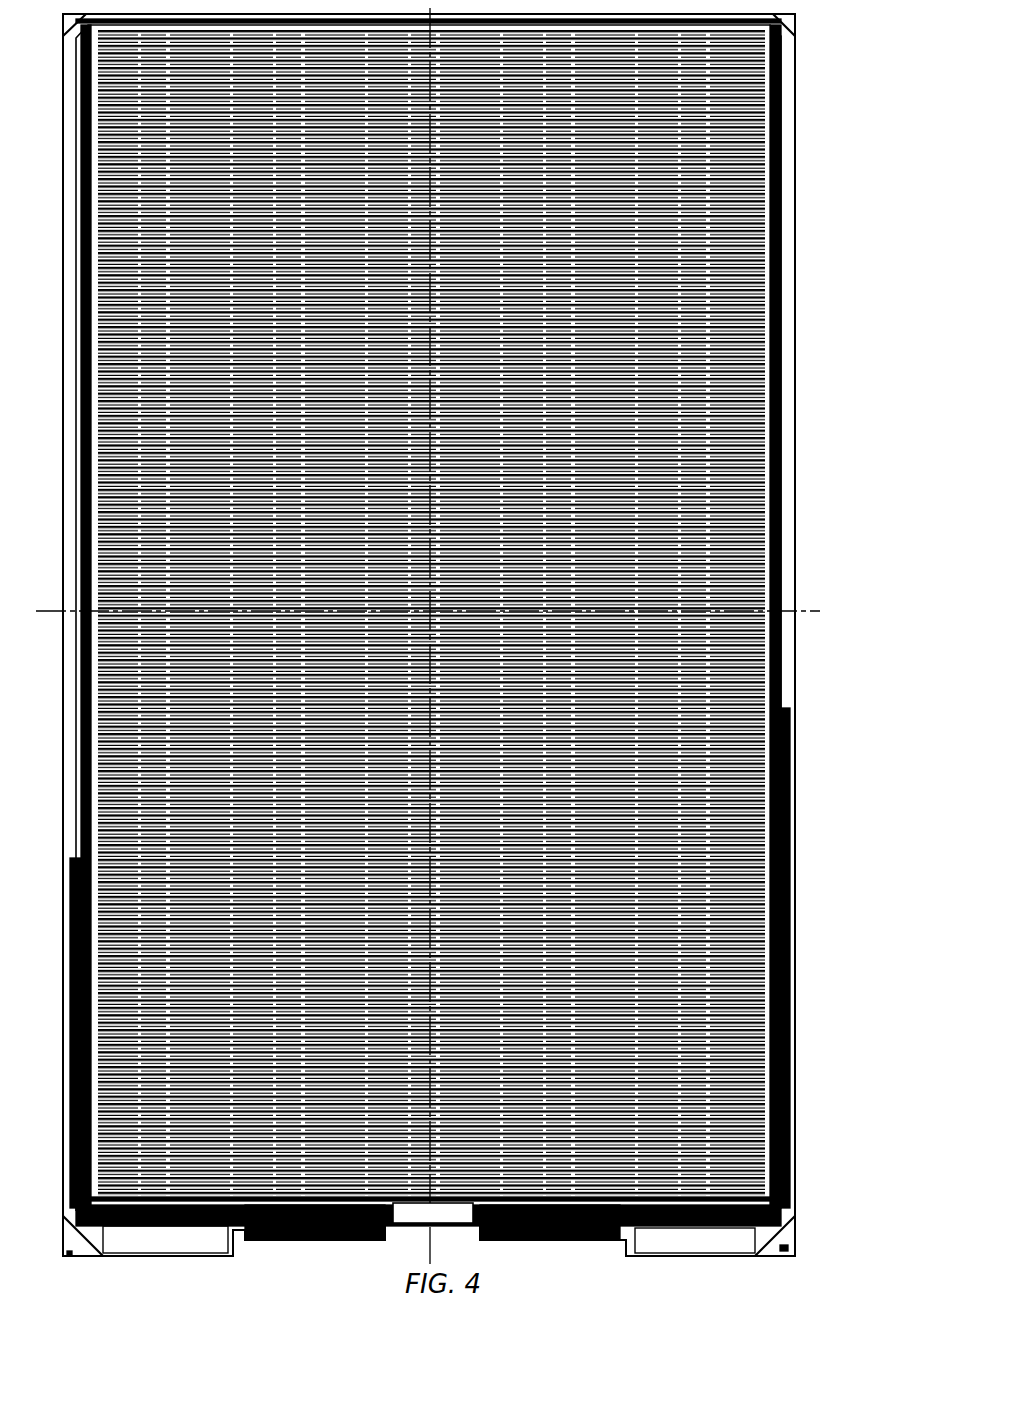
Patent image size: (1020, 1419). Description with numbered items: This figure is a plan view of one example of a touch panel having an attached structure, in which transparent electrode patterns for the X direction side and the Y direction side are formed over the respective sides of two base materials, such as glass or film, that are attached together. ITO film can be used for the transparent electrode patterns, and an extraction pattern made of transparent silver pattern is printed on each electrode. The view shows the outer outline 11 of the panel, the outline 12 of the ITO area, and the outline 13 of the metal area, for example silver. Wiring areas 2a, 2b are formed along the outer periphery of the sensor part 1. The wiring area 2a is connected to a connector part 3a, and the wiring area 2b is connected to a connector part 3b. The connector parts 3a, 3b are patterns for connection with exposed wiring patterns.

The sensor part 1 is at (758, 794).
The wiring area 2a is at (165, 1220).
The wiring area 2b is at (677, 1220).
The connector part 3a is at (308, 1232).
The connector part 3b is at (552, 1232).
The outer outline 11 is at (790, 1212).
The outline of ITO 12 is at (790, 1232).
The outline of metal area 13 is at (775, 1244).